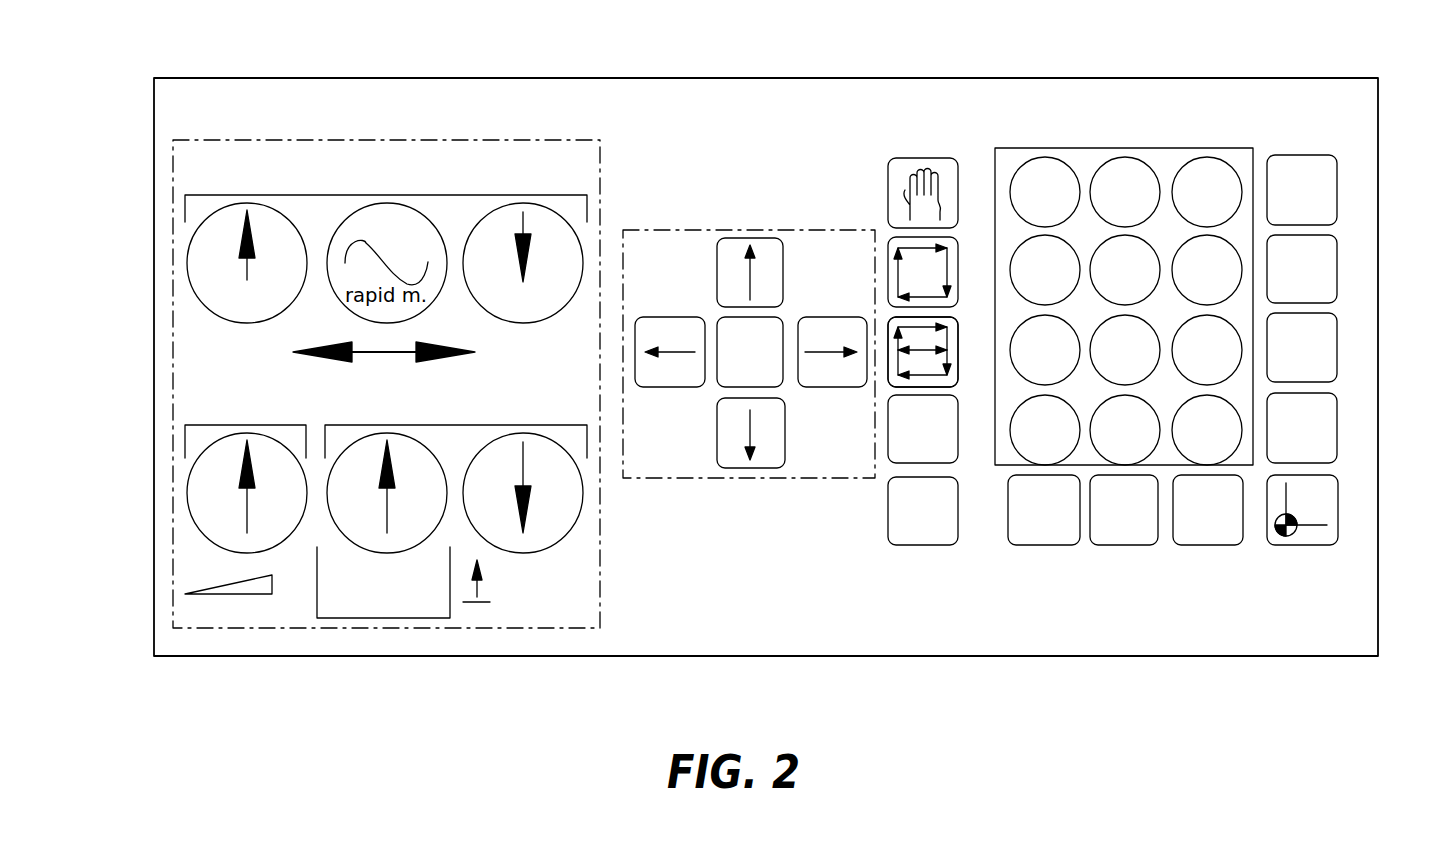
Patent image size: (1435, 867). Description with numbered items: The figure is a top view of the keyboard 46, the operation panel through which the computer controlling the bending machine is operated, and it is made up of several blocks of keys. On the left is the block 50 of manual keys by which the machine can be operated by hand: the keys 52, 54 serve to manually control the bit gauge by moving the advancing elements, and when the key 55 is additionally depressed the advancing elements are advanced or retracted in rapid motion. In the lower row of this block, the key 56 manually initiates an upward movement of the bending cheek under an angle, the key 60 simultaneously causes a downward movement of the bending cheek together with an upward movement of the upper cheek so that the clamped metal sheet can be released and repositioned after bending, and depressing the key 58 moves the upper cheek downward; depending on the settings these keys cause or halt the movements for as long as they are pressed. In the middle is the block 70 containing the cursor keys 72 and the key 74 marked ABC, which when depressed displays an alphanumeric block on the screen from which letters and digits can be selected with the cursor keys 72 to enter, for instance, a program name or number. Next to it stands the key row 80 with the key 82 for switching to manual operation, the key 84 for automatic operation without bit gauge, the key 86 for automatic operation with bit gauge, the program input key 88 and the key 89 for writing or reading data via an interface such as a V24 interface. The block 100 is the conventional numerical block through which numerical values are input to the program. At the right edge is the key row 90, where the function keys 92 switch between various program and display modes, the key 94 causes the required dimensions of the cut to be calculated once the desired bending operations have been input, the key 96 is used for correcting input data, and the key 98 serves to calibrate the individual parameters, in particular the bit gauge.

The keyboard 46 is at (720, 78).
The block of manual keys 50 is at (372, 140).
The bit gauge key 52 is at (195, 262).
The bit gauge key 54 is at (532, 212).
The rapid motion key 55 is at (233, 217).
The bending cheek key 56 is at (195, 493).
The upper cheek down key 58 is at (540, 545).
The double function key 60 is at (333, 510).
The block of cursor keys 70 is at (812, 230).
The cursor keys 72 is at (677, 323).
The ABC key 74 is at (722, 384).
The key row 80 is at (880, 142).
The manual operation key 82 is at (943, 168).
The automatic operation key without bit gauge 84 is at (958, 318).
The automatic operation key with bit gauge 86 is at (958, 350).
The program input key 88 is at (950, 457).
The interface key 89 is at (917, 542).
The key row 90 is at (1350, 289).
The function keys 92 is at (1337, 190).
The calculation key 94 is at (1337, 348).
The correction key 96 is at (1337, 425).
The calibration key 98 is at (1330, 507).
The numerical block 100 is at (1118, 148).